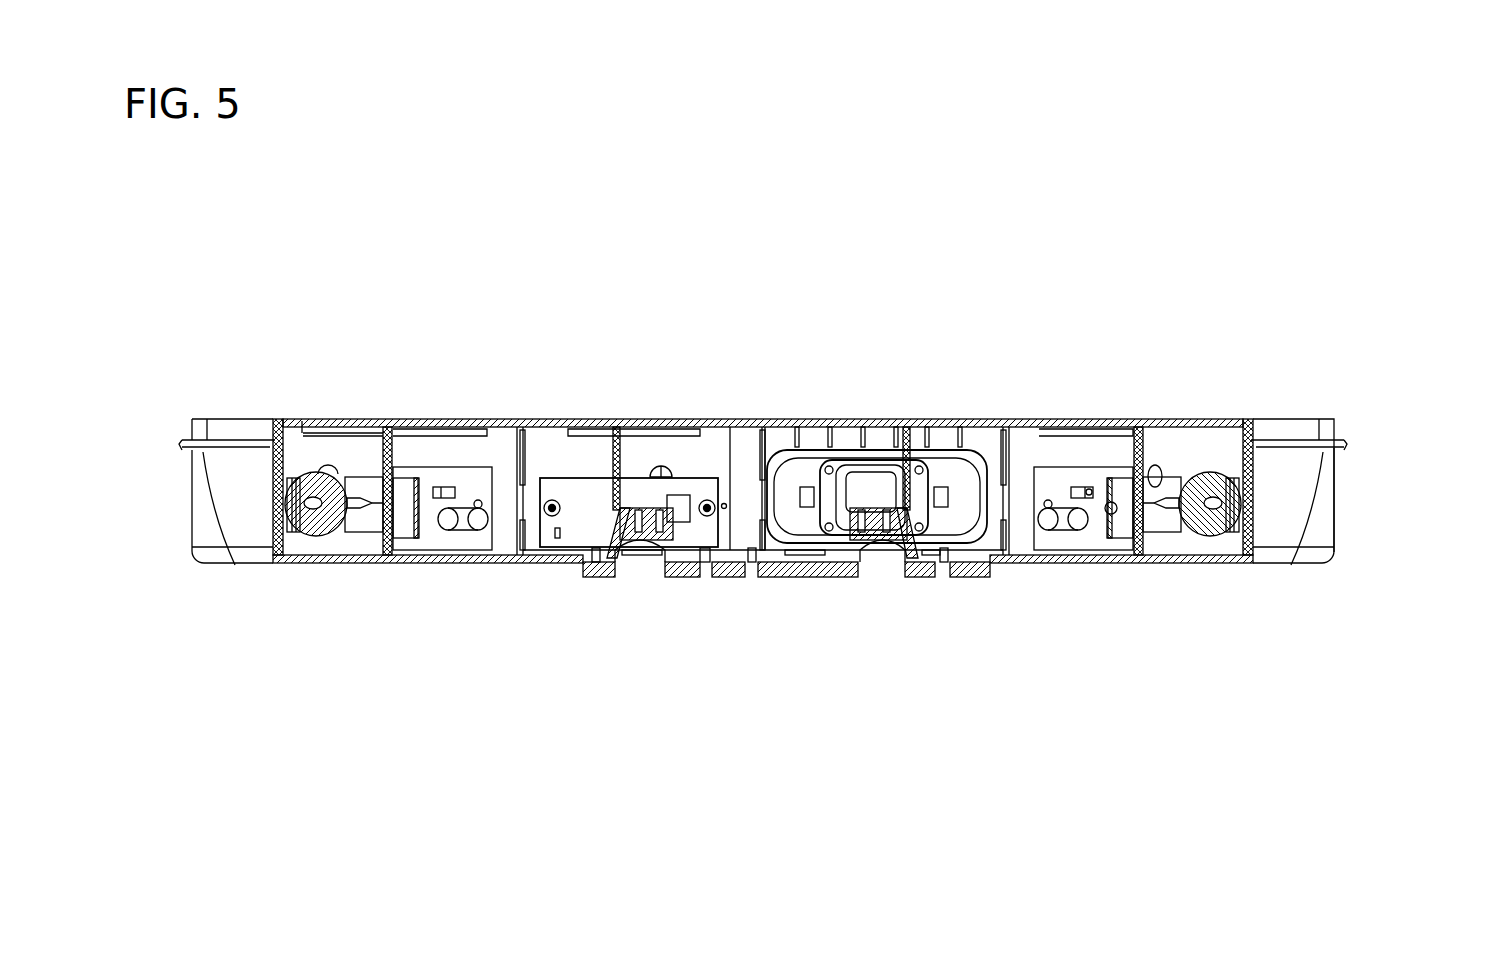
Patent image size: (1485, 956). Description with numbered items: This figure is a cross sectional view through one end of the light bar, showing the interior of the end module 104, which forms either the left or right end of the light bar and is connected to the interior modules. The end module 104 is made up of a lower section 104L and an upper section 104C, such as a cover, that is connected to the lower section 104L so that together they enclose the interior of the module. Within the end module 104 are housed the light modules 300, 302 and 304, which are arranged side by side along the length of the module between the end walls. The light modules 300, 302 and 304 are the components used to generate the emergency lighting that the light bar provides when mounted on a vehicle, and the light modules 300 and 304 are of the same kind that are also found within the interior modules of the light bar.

The end module 104 is at (1253, 533).
The upper section 104C is at (1296, 430).
The lower section 104L is at (1336, 505).
The light module 300 is at (445, 447).
The light module 302 is at (948, 465).
The light module 304 is at (651, 447).